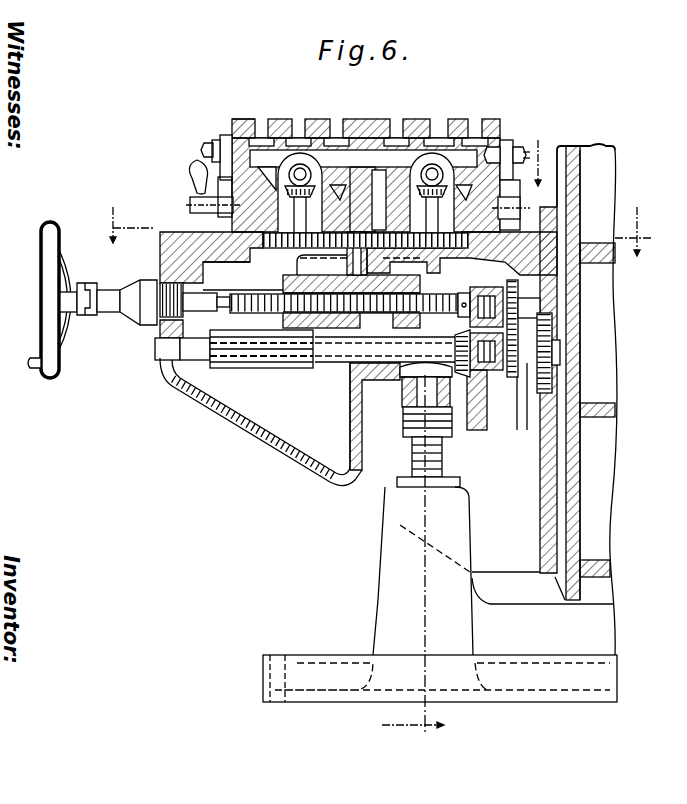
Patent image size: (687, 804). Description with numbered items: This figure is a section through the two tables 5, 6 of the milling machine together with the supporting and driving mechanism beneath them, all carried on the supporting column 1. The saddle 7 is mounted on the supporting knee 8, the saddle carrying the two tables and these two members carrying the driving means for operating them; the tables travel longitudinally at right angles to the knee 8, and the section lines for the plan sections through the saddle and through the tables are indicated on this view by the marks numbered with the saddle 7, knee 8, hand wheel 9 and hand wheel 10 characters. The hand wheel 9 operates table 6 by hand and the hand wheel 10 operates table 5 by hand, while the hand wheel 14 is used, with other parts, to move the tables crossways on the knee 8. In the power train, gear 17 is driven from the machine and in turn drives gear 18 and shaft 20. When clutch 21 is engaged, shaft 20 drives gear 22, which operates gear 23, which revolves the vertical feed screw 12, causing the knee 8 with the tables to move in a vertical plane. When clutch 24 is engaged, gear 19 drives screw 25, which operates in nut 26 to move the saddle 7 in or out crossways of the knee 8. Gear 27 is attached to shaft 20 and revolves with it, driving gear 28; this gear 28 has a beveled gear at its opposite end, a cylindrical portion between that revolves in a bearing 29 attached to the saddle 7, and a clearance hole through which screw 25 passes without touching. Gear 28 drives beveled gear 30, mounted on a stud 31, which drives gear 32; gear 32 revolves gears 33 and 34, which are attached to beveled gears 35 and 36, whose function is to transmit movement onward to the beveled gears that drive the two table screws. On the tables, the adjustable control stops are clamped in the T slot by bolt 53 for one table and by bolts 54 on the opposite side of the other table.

The supporting column 1 is at (378, 585).
The table 5 is at (233, 132).
The table 6 is at (500, 125).
The saddle 7 is at (381, 170).
The supporting knee 8 is at (340, 470).
The hand wheel 9 is at (461, 438).
The hand wheel 10 is at (375, 229).
The screw 12 is at (408, 462).
The hand wheel 14 is at (60, 240).
The gear 17 is at (547, 377).
The gear 18 is at (550, 388).
The gear 19 is at (520, 298).
The shaft 20 is at (183, 345).
The clutch 21 is at (477, 425).
The gear 22 is at (357, 328).
The gear 23 is at (390, 310).
The clutch 24 is at (520, 323).
The screw 25 is at (412, 328).
The nut 26 is at (458, 338).
The gear 27 is at (200, 368).
The gear 28 is at (235, 314).
The bearing 29 is at (257, 368).
The beveled gear 30 is at (160, 325).
The stud 31 is at (364, 170).
The gear 32 is at (322, 180).
The gear 33 is at (238, 119).
The gear 34 is at (462, 172).
The beveled gear 35 is at (284, 153).
The beveled gear 36 is at (442, 172).
The bolt 53 is at (221, 138).
The bolt 54 is at (517, 142).